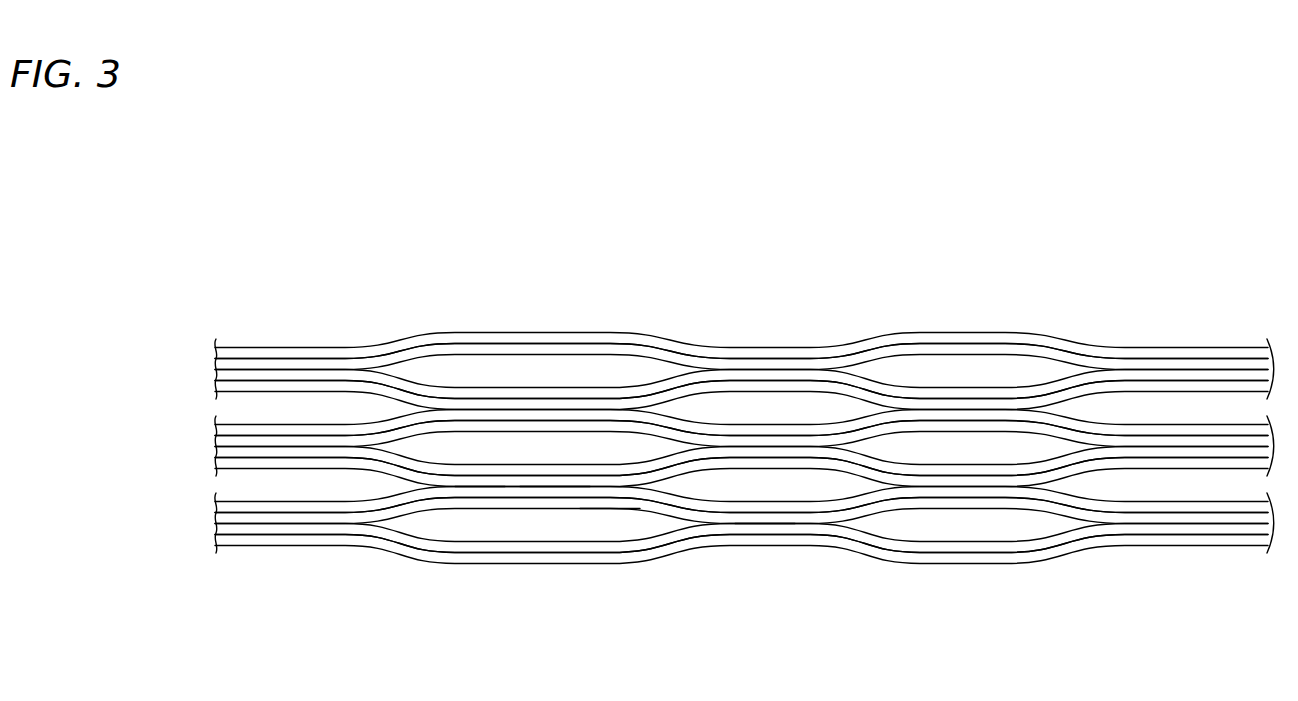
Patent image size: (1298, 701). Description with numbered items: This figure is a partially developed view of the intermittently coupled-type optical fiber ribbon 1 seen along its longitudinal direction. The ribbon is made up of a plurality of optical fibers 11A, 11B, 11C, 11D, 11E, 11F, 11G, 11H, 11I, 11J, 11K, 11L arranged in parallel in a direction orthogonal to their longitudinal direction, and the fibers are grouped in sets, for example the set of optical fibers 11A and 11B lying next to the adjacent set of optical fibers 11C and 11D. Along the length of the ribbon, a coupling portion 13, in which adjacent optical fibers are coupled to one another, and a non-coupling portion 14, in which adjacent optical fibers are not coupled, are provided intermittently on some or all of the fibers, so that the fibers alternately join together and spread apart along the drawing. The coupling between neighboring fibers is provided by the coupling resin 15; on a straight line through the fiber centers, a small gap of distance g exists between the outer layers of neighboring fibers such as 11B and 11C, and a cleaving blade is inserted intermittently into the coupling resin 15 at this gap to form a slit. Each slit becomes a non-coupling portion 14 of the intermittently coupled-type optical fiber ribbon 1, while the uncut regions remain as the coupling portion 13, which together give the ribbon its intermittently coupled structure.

The intermittently coupled-type optical fiber ribbon 1 is at (622, 284).
The optical fiber 11A is at (215, 352).
The optical fiber 11B is at (215, 362).
The optical fiber 11C is at (215, 374).
The optical fiber 11D is at (215, 385).
The optical fiber 11E is at (215, 428).
The optical fiber 11F is at (215, 440).
The optical fiber 11G is at (215, 454).
The optical fiber 11H is at (215, 462).
The optical fiber 11I is at (215, 506).
The optical fiber 11J is at (215, 518).
The optical fiber 11K is at (215, 530).
The optical fiber 11L is at (215, 540).
The coupling portion 13 is at (540, 492).
The non-coupling portion 14 is at (690, 492).
The coupling resin 15 is at (497, 487).